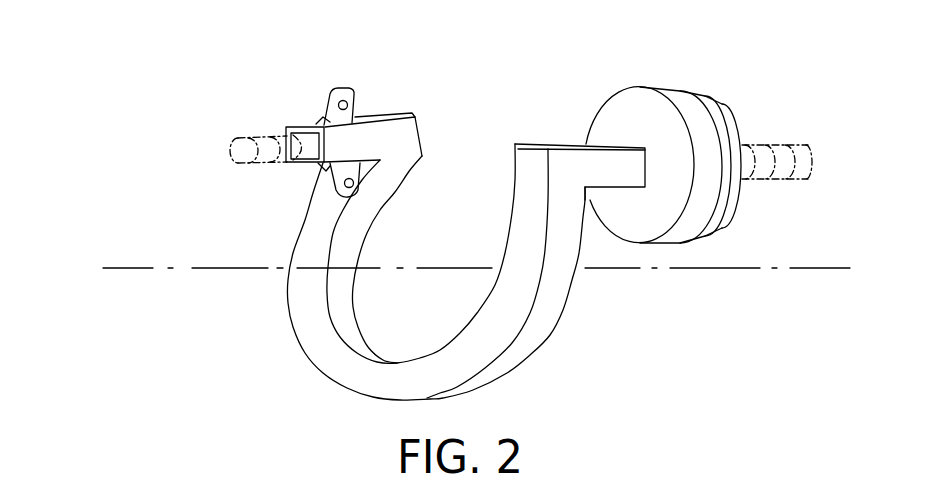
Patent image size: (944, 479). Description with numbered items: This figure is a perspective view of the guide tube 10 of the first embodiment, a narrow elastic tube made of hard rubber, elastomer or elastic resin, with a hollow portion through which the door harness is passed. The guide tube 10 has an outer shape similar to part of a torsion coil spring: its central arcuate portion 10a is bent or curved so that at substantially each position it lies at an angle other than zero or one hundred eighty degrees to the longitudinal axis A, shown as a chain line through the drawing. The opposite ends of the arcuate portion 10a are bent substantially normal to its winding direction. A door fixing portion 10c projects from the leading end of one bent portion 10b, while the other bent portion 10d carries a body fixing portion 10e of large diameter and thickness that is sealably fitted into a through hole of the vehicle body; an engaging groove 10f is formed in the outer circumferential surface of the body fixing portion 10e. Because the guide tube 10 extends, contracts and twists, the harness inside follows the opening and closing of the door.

The guide tube 10 is at (468, 47).
The arcuate portion 10a is at (508, 357).
The bent portion 10b is at (370, 137).
The door fixing portion 10c is at (330, 100).
The bent portion 10d is at (610, 170).
The body fixing portion 10e is at (693, 118).
The engaging groove 10f is at (718, 213).
The longitudinal axis A is at (127, 268).